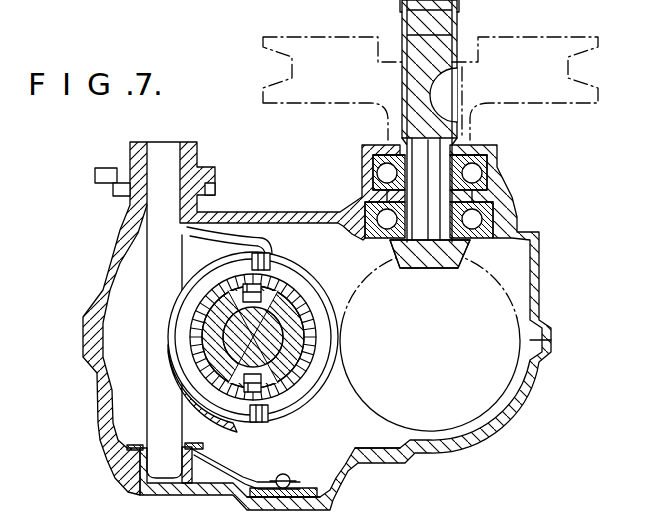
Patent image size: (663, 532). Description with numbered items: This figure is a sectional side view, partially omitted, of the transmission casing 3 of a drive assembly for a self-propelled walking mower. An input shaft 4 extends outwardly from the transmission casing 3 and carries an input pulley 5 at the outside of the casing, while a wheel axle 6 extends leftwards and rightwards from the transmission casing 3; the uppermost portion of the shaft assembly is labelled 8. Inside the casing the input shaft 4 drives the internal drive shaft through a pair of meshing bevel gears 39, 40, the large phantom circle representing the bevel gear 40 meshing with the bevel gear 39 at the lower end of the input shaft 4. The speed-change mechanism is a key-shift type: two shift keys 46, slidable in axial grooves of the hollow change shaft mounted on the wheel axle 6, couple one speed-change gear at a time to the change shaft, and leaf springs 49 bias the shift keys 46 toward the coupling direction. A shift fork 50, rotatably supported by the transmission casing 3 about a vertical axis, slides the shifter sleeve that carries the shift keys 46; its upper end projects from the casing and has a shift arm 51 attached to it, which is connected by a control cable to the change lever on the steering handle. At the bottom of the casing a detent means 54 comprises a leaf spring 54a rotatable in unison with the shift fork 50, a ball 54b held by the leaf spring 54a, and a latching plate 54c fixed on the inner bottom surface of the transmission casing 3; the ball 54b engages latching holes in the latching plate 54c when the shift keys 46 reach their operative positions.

The transmission casing 3 is at (473, 444).
The input shaft 4 is at (406, 128).
The input pulley 5 is at (283, 58).
The wheel axle 6 is at (285, 372).
The shaft end 8 is at (310, 6).
The bevel gear 39 is at (458, 262).
The bevel gear 40 is at (512, 415).
The shift key 46 is at (270, 280).
The leaf spring 49 is at (290, 300).
The shift fork 50 is at (250, 237).
The shift arm 51 is at (112, 168).
The detent means 54 is at (310, 466).
The leaf spring 54a is at (285, 460).
The ball 54b is at (250, 497).
The latching plate 54c is at (330, 510).